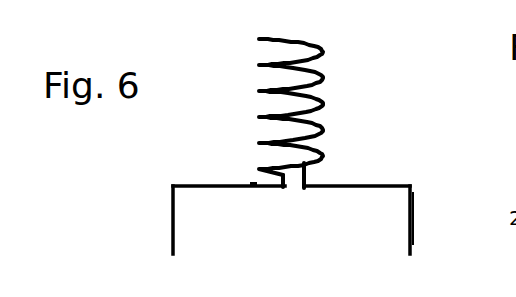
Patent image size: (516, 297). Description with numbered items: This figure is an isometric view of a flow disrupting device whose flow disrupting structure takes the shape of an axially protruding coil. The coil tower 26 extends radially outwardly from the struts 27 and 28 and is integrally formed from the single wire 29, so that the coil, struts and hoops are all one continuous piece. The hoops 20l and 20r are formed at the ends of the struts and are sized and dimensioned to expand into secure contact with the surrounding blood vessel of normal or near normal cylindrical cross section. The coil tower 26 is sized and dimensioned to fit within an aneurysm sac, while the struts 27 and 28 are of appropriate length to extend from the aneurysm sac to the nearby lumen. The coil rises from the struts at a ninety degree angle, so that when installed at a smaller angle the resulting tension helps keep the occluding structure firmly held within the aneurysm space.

The coil tower 26 is at (339, 69).
The strut 27 is at (215, 185).
The strut 28 is at (397, 185).
The single wire 29 is at (284, 188).
The hoop 20l is at (172, 232).
The hoop 20r is at (413, 232).